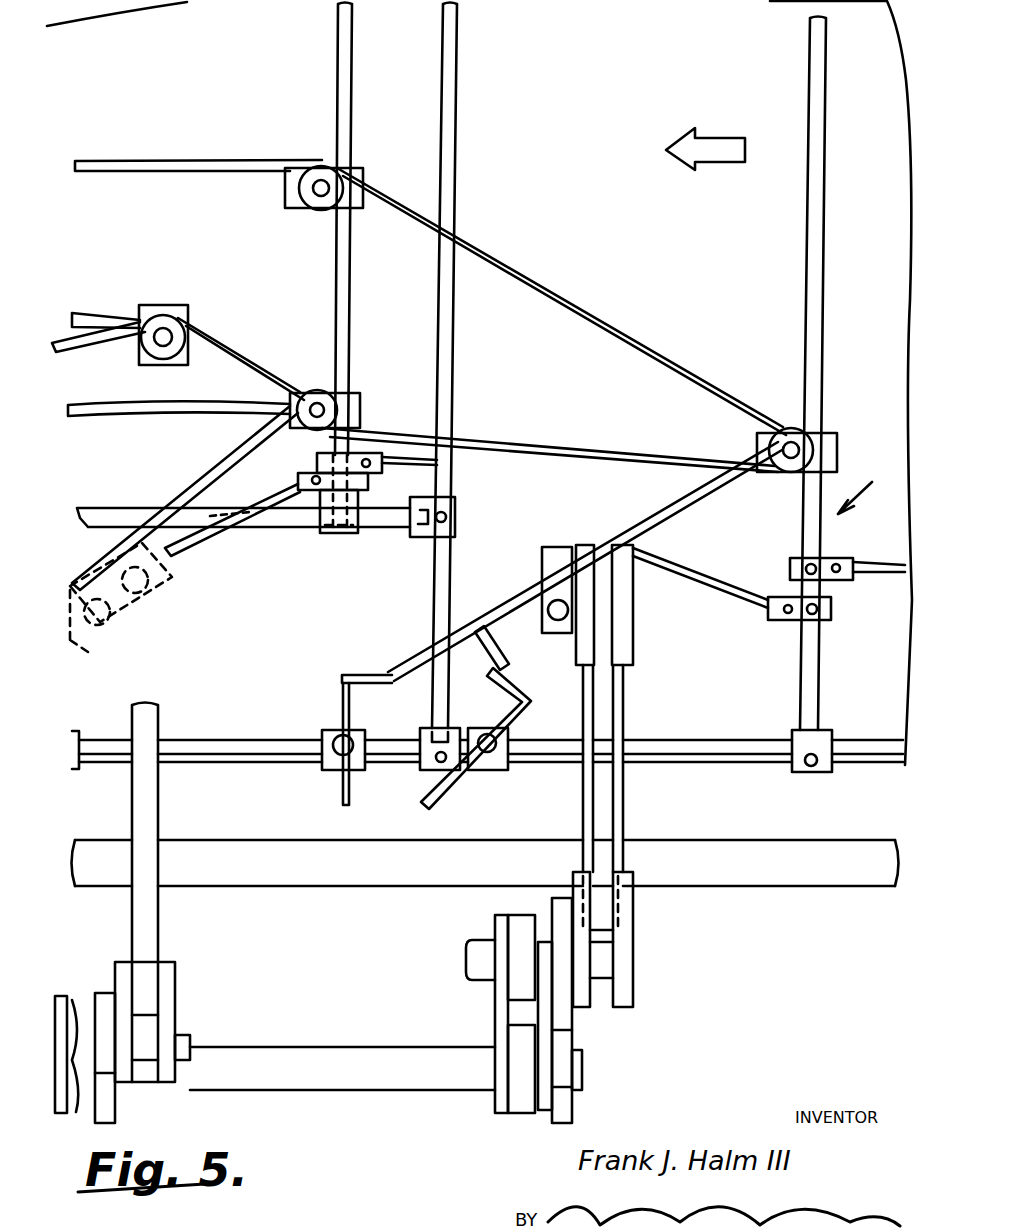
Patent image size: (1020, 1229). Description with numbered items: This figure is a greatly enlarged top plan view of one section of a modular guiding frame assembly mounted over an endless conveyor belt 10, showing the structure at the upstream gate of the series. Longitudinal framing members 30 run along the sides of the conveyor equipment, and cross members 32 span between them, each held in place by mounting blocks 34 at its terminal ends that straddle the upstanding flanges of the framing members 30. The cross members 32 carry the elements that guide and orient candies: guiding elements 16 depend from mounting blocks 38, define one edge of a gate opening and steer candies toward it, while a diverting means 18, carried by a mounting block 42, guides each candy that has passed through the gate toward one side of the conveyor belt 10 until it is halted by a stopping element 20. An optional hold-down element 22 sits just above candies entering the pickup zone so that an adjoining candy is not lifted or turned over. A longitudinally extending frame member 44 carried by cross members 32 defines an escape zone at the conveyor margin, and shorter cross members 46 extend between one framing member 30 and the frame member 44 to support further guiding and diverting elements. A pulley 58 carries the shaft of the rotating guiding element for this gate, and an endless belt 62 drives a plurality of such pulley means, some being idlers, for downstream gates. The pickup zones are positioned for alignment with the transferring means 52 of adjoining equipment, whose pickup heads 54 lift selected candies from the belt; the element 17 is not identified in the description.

The conveyor belt 10 is at (652, 101).
The guiding element 16 is at (104, 422).
The direction arrow 17 is at (859, 492).
The diverting means 18 is at (224, 460).
The stopping element 20 is at (522, 700).
The hold-down element 22 is at (186, 548).
The longitudinal framing member 30 is at (716, 732).
The cross member 32 is at (458, 190).
The mounting block 34 is at (418, 776).
The mounting block 38 is at (362, 484).
The mounting block 42 is at (326, 736).
The longitudinally extending frame member 44 is at (292, 530).
The shorter cross member 46 is at (346, 104).
The transferring means 52 is at (164, 814).
The pickup head 54 is at (150, 612).
The pulley means 58 is at (312, 392).
The endless belt 62 is at (568, 303).